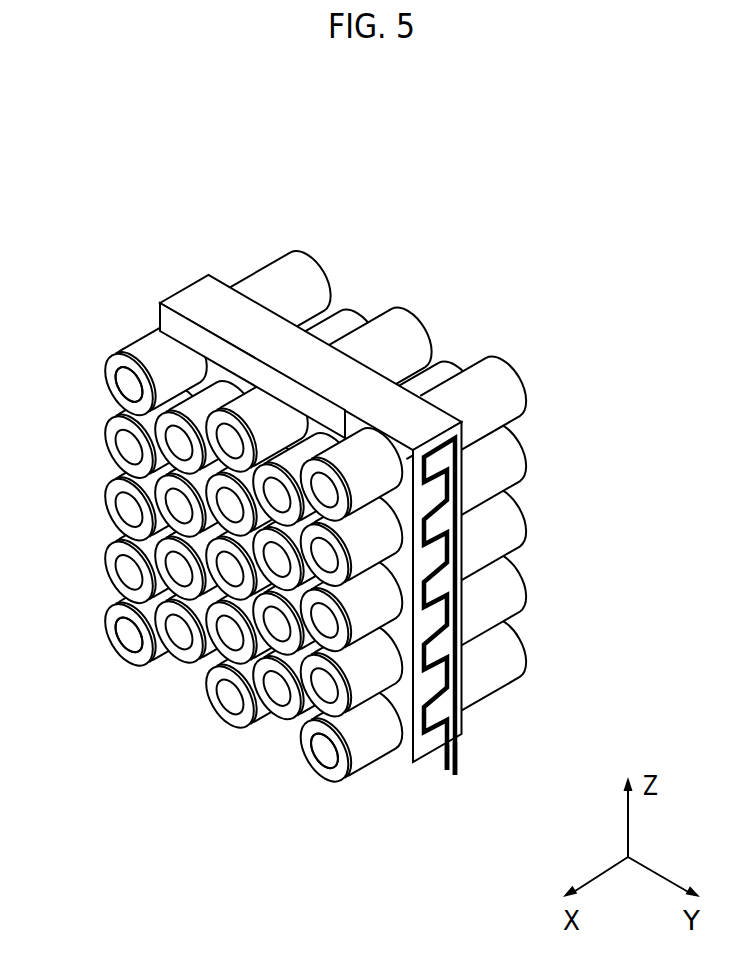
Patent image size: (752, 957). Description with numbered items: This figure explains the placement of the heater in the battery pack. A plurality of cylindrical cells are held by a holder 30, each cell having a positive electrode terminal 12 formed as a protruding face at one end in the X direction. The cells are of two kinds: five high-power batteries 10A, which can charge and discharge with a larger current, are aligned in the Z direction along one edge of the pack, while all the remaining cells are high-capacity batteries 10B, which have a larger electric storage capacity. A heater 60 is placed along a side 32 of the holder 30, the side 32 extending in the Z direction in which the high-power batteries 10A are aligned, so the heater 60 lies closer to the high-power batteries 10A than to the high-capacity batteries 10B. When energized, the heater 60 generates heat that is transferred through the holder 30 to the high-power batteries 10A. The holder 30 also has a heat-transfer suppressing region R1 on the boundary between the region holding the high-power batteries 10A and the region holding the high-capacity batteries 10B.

The high-power battery 10A is at (523, 377).
The high-capacity battery 10B is at (350, 308).
The positive electrode terminal 12 is at (126, 386).
The holder 30 is at (188, 283).
The side 32 is at (423, 752).
The heat-transfer suppressing region R1 is at (418, 401).
The heater 60 is at (461, 748).